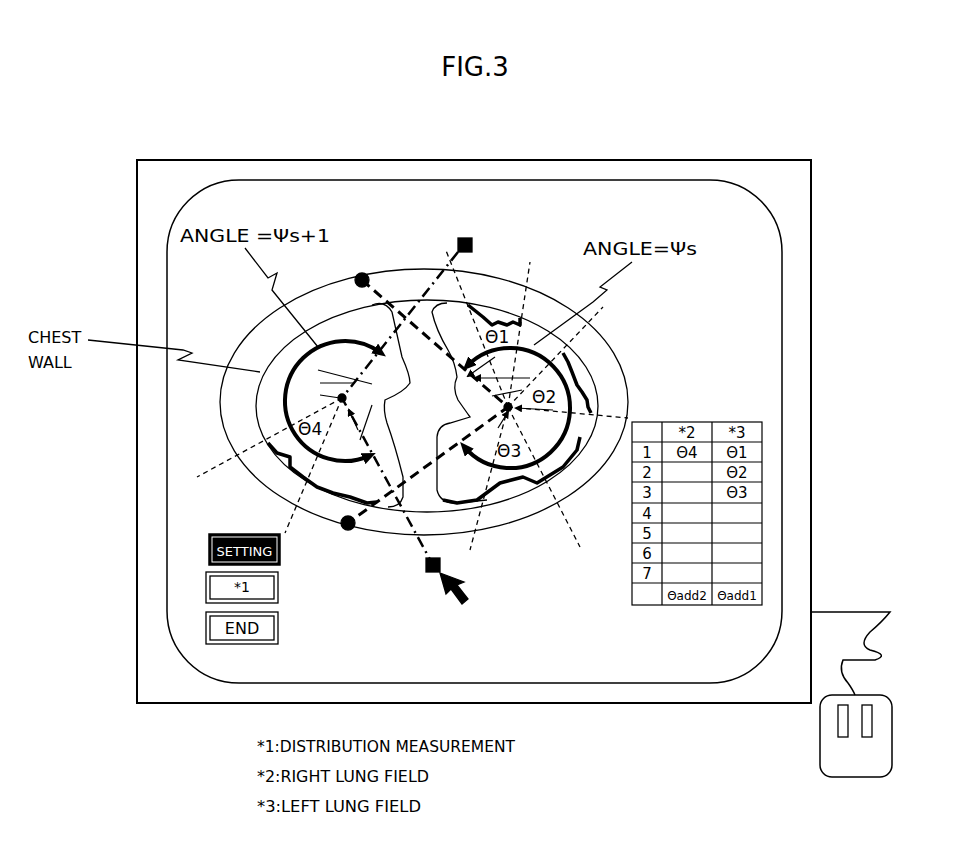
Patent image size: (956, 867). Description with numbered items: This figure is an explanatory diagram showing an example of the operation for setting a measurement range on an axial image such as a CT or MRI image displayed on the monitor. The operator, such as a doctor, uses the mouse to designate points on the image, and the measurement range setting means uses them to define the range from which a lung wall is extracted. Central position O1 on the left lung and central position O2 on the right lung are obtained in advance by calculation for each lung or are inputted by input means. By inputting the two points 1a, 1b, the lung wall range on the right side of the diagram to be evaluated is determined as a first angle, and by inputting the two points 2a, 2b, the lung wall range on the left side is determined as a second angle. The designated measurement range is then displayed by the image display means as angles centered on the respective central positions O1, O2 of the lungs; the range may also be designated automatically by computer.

The designated point 1a is at (349, 273).
The designated point 1b is at (332, 536).
The designated point 2a is at (473, 234).
The designated point 2b is at (421, 572).
The central position on the left lung O1 is at (504, 408).
The central position on the right lung O2 is at (346, 398).